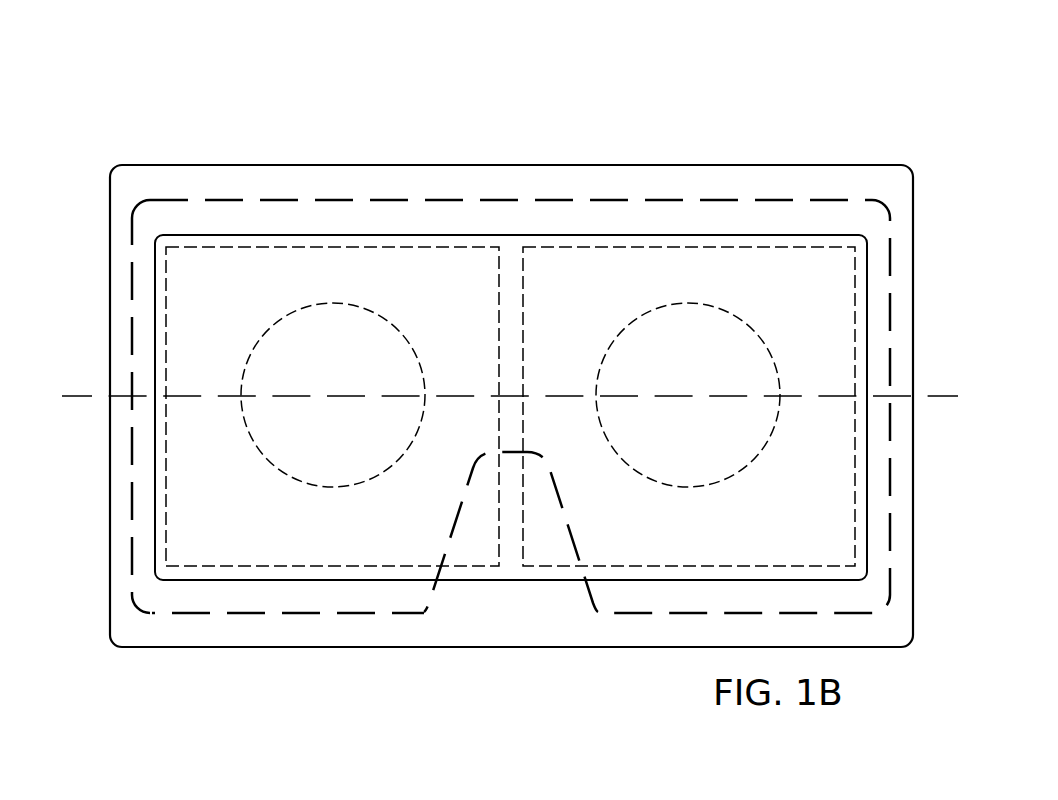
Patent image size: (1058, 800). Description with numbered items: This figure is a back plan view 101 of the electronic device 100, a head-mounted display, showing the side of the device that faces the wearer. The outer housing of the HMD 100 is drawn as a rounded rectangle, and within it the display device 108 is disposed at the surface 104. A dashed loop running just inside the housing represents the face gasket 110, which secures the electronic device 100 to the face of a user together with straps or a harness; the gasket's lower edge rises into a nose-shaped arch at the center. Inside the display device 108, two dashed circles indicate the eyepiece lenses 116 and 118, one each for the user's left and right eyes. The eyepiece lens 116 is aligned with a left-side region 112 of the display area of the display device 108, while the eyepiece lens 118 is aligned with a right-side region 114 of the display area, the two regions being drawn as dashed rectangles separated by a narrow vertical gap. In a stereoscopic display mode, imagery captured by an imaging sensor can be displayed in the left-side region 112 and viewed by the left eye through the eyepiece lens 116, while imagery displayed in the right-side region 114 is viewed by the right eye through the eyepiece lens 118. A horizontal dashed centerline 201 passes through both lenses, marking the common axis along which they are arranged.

The electronic device 100 is at (684, 166).
The back plan view 101 is at (259, 144).
The surface 104 is at (178, 629).
The display device 108 is at (481, 234).
The face gasket 110 is at (300, 615).
The left-side region 112 is at (468, 555).
The right-side region 114 is at (554, 555).
The eyepiece lens 116 is at (297, 310).
The eyepiece lens 118 is at (717, 308).
The center axis 201 is at (78, 393).